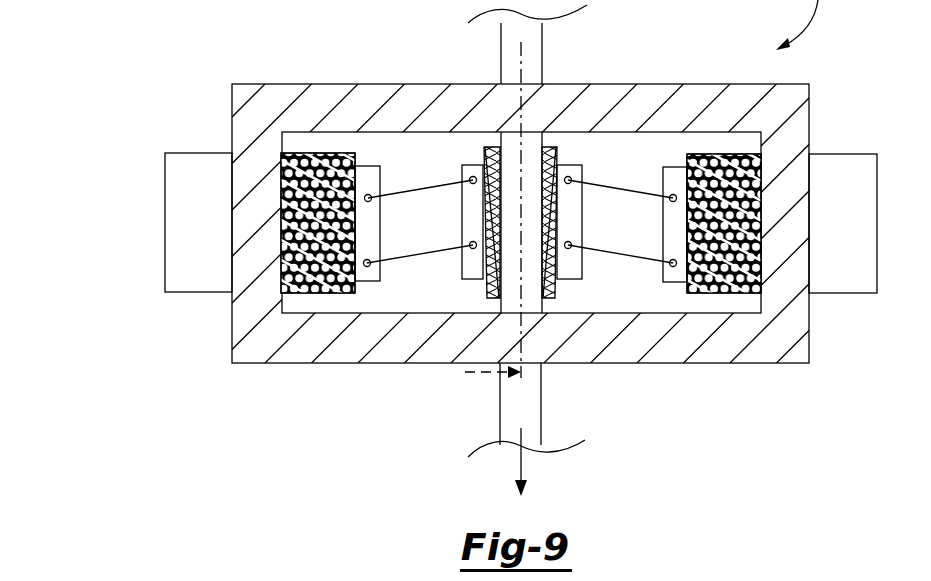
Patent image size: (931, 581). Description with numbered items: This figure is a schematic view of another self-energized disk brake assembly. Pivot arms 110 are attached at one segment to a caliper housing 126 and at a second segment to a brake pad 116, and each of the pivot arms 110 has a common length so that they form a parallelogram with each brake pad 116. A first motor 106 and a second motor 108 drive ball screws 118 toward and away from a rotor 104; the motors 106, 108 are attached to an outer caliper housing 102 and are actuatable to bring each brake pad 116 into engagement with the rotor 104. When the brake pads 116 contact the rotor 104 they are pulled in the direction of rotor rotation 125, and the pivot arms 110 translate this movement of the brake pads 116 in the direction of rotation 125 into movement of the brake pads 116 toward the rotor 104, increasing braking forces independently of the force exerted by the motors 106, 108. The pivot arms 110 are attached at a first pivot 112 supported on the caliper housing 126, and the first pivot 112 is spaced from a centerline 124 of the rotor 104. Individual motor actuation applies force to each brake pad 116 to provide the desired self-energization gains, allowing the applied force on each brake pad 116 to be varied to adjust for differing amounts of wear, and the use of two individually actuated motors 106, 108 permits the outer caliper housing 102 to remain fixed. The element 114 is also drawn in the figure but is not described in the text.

The outer caliper housing 102 is at (797, 122).
The rotor 104 is at (528, 392).
The first motor 106 is at (188, 175).
The second motor 108 is at (833, 280).
The pivot arms 110 is at (432, 250).
The first pivot 112 is at (568, 168).
The terminal 114 is at (673, 185).
The brake pad 116 is at (358, 275).
The ball screws 118 is at (318, 165).
The centerline 124 is at (465, 372).
The direction of rotor rotation 125 is at (520, 463).
The caliper housing 126 is at (490, 150).